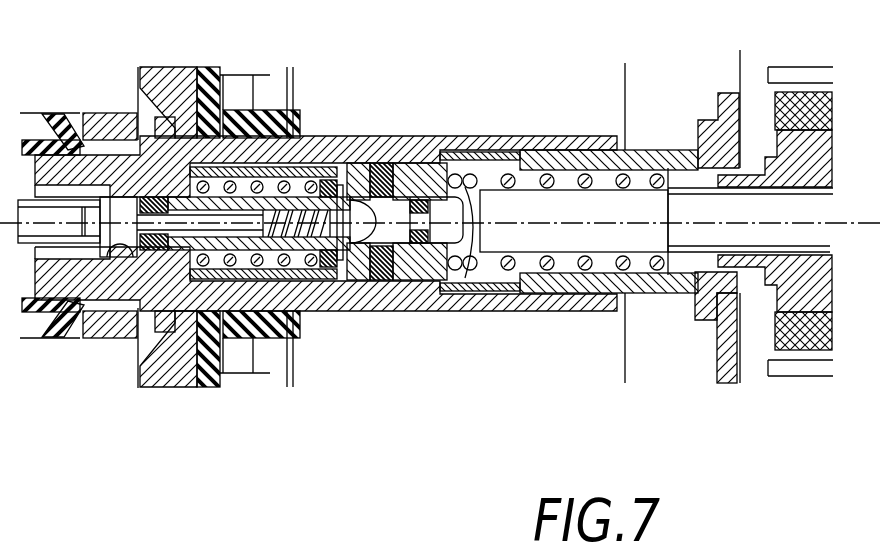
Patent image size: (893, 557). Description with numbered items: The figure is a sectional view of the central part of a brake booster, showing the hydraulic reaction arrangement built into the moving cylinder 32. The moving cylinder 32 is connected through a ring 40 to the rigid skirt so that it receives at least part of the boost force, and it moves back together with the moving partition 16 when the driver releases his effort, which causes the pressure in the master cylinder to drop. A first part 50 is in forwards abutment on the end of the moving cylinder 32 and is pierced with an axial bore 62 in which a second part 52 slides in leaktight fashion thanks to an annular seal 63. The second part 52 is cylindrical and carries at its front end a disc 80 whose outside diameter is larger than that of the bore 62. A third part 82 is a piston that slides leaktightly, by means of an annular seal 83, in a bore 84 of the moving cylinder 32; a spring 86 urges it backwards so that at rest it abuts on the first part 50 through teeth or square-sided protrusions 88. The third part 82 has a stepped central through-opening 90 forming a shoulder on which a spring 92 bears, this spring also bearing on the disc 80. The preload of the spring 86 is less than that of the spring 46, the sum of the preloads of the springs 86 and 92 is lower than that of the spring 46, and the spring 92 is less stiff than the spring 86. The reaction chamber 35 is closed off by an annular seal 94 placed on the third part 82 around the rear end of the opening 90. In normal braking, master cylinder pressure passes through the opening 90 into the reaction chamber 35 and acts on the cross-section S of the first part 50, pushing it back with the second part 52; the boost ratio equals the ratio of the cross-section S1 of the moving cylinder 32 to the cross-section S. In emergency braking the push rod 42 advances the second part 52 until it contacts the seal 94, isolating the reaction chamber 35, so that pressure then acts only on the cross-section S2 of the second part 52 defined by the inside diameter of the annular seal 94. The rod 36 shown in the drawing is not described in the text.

The moving partition 16 is at (733, 353).
The moving cylinder 32 is at (588, 300).
The reaction chamber 35 is at (322, 272).
The actuating rod 36 is at (118, 198).
The ring 40 is at (705, 120).
The push rod 42 is at (807, 205).
The spring 46 is at (640, 292).
The first part 50 is at (397, 258).
The second part 52 is at (419, 262).
The axial bore 62 is at (401, 210).
The annular seal 63 is at (470, 195).
The disc 80 is at (369, 196).
The third part 82 is at (218, 73).
The annular seal 83 is at (163, 252).
The bore 84 is at (125, 257).
The spring 86 is at (203, 387).
The teeth or square-sided protrusions 88 is at (358, 250).
The central through-opening 90 is at (235, 320).
The spring 92 is at (363, 262).
The annular seal 94 is at (334, 186).
The cross-section of the first part S is at (442, 10).
The cross-section of the moving cylinder S1 is at (50, 38).
The cross-section of the second part S2 is at (315, 5).